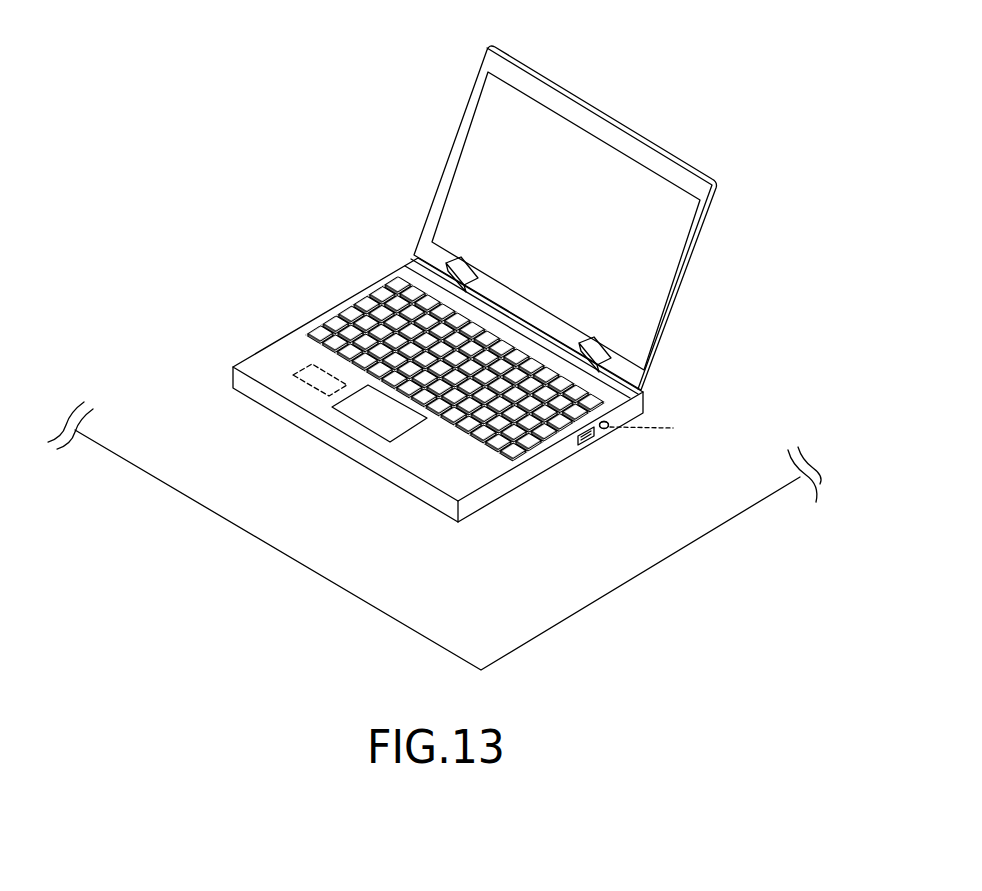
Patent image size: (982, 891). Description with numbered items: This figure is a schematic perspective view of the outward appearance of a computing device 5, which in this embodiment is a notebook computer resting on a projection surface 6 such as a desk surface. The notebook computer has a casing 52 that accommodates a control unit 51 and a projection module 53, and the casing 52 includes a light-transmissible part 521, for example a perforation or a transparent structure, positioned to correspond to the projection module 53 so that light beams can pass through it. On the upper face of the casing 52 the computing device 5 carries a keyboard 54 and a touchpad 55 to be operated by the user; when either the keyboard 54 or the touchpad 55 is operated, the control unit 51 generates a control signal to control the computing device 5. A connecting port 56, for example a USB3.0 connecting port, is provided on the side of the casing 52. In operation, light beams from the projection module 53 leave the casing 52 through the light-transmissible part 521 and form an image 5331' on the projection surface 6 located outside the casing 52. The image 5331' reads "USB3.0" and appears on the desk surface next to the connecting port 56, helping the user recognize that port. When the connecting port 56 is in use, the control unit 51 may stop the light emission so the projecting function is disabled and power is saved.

The computing device 5 is at (367, 93).
The projection surface 6 is at (593, 583).
The control unit 51 is at (318, 378).
The casing 52 is at (297, 342).
The light-transmissible part 521 is at (607, 423).
The projection module 53 is at (601, 421).
The keyboard 54 is at (523, 432).
The touchpad 55 is at (374, 415).
The connecting port 56 is at (591, 446).
The image 5331' is at (695, 441).